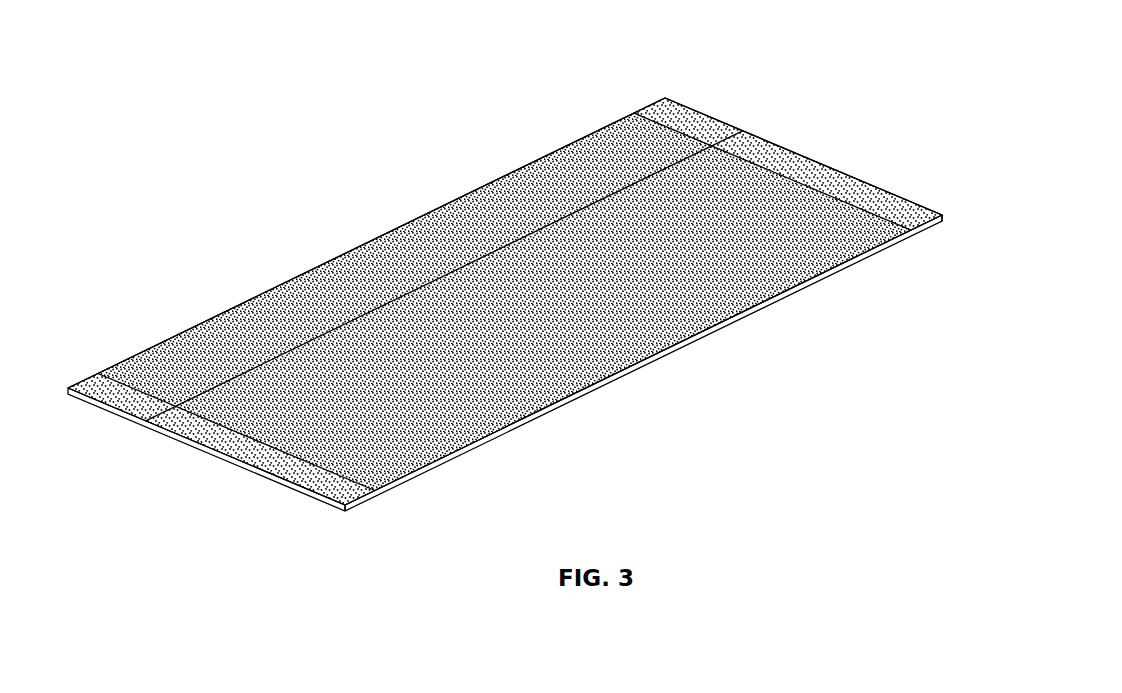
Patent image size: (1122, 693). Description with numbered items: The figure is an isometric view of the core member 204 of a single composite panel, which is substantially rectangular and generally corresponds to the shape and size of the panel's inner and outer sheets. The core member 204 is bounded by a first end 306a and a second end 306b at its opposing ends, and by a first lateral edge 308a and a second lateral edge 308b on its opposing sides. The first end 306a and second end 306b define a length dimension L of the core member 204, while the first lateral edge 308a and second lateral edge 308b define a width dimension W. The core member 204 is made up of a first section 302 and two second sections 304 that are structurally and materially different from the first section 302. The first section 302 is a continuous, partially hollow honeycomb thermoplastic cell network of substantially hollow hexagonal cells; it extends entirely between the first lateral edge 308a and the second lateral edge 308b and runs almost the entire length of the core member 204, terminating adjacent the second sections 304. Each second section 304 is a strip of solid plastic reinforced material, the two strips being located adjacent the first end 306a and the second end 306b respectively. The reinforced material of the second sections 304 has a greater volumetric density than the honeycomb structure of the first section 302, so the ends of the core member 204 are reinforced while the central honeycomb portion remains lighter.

The core member 204 is at (864, 58).
The first section 302 is at (443, 215).
The second section 304 is at (727, 132).
The first end 306a is at (925, 203).
The second end 306b is at (326, 505).
The first lateral edge 308a is at (357, 248).
The second lateral edge 308b is at (708, 332).
The width dimension W is at (606, 164).
The length dimension L is at (197, 402).